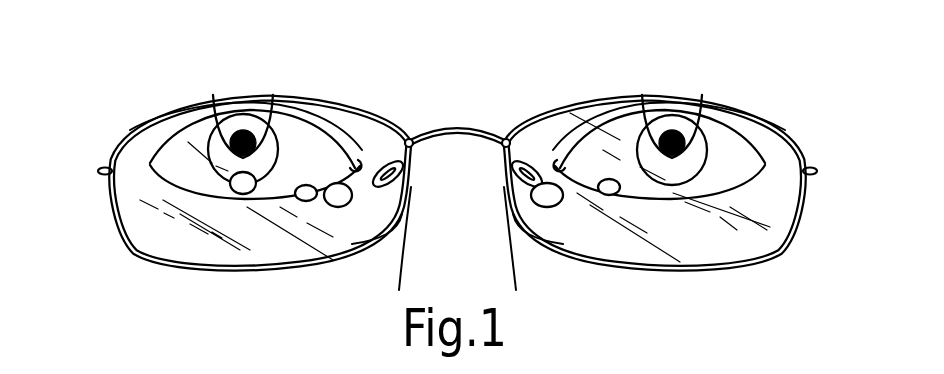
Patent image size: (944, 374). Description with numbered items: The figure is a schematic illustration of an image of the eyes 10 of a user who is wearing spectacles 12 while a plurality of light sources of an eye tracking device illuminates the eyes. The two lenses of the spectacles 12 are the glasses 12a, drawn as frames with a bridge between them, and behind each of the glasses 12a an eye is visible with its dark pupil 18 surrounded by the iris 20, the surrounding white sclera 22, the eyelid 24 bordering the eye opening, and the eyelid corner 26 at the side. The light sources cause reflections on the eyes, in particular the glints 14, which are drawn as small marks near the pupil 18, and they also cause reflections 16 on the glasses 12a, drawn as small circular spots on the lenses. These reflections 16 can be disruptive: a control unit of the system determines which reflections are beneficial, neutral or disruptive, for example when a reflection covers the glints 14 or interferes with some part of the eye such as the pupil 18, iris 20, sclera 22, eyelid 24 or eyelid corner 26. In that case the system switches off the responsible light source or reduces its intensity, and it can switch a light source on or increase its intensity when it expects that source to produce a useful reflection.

The eyes 10 is at (172, 151).
The spectacles 12 is at (100, 209).
The glasses 12a is at (153, 234).
The glints 14 is at (213, 95).
The reflections 16 is at (245, 192).
The pupil 18 is at (246, 131).
The iris 20 is at (277, 137).
The sclera 22 is at (198, 140).
The eyelid 24 is at (233, 112).
The eyelid corner 26 is at (112, 150).